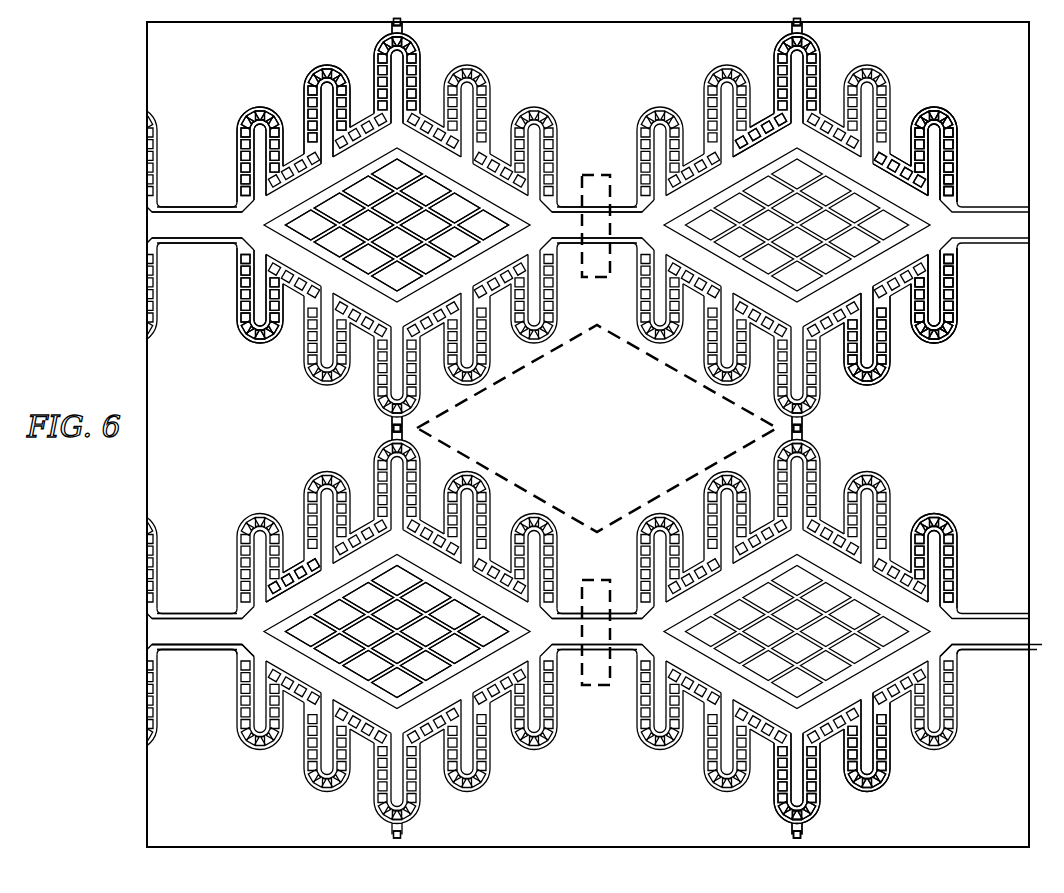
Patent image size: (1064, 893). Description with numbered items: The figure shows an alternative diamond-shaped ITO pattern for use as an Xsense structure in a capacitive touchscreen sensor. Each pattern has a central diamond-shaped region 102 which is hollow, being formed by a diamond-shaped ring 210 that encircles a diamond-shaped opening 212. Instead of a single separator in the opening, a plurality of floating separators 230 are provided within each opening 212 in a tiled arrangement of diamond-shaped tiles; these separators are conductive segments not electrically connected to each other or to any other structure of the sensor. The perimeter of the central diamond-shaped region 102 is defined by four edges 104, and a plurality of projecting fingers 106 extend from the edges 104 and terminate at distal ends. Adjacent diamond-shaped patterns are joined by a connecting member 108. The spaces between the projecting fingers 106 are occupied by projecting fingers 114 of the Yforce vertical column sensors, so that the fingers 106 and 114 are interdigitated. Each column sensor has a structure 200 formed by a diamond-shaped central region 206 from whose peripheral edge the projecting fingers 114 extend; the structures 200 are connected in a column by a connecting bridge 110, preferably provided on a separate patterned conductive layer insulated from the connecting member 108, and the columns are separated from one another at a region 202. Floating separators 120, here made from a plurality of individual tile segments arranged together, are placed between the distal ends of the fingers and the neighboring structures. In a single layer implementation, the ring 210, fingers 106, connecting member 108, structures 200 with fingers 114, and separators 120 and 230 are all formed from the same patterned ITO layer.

The central diamond-shaped region 102 is at (947, 216).
The edges 104 is at (900, 167).
The projecting fingers 106 is at (953, 142).
The connecting member 108 is at (988, 625).
The connecting bridge 110 is at (590, 176).
The projecting fingers 114 is at (303, 102).
The floating separators 120 is at (237, 152).
The structure of the vertical column sensor 200 is at (615, 441).
The region 202 is at (388, 430).
The central region 206 is at (727, 418).
The diamond-shaped ring 210 is at (765, 140).
The diamond-shaped opening 212 is at (270, 660).
The floating separators 230 is at (457, 208).